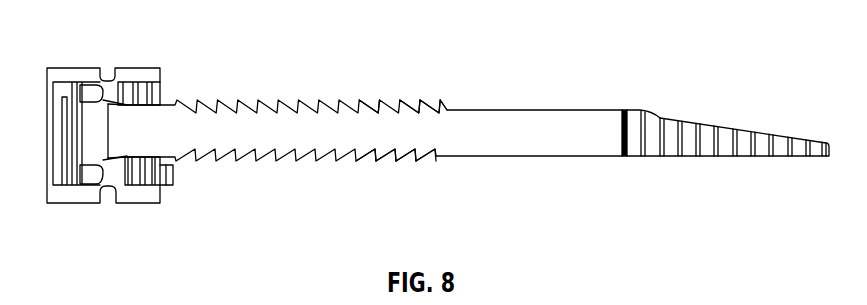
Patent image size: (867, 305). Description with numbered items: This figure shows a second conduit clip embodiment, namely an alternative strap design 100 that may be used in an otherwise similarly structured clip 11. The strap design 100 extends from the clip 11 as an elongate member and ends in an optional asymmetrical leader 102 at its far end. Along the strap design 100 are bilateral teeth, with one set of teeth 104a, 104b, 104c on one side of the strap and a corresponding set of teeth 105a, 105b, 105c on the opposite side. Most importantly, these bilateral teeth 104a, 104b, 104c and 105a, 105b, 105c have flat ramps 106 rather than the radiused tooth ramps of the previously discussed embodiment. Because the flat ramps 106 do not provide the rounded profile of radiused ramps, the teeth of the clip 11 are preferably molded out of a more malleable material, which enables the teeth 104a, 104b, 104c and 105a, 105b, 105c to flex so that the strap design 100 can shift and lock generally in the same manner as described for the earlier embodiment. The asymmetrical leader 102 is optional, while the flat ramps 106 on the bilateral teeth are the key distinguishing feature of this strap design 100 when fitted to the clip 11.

The clip 11 is at (243, 62).
The strap design 100 is at (550, 140).
The asymmetrical leader 102 is at (709, 177).
The tooth 104a is at (437, 161).
The tooth 104b is at (417, 161).
The tooth 104c is at (397, 160).
The tooth 105a is at (442, 104).
The tooth 105b is at (423, 102).
The tooth 105c is at (402, 100).
The flat ramps 106 is at (367, 100).